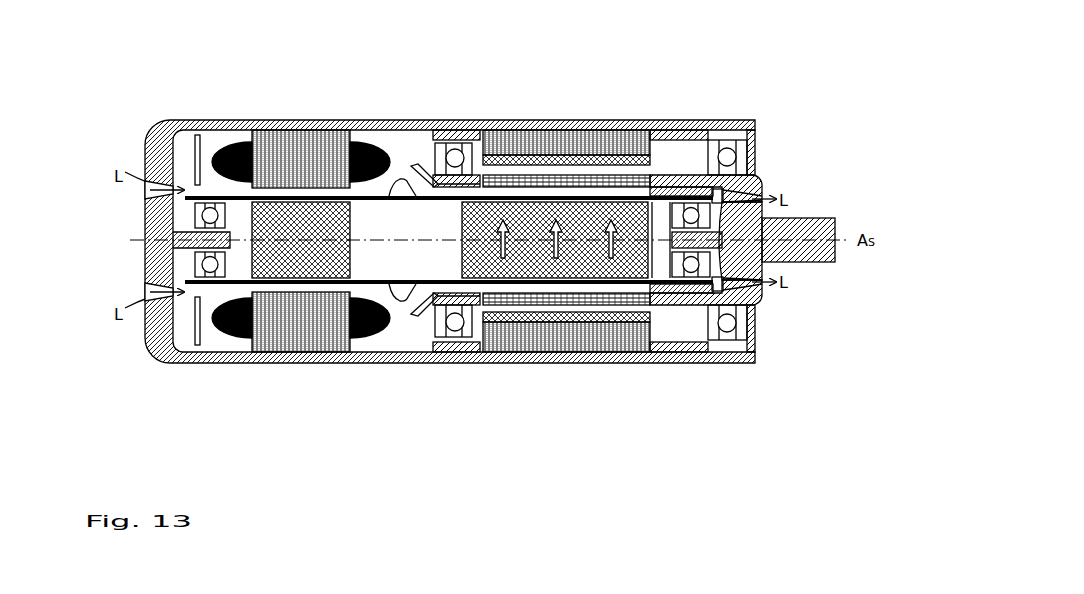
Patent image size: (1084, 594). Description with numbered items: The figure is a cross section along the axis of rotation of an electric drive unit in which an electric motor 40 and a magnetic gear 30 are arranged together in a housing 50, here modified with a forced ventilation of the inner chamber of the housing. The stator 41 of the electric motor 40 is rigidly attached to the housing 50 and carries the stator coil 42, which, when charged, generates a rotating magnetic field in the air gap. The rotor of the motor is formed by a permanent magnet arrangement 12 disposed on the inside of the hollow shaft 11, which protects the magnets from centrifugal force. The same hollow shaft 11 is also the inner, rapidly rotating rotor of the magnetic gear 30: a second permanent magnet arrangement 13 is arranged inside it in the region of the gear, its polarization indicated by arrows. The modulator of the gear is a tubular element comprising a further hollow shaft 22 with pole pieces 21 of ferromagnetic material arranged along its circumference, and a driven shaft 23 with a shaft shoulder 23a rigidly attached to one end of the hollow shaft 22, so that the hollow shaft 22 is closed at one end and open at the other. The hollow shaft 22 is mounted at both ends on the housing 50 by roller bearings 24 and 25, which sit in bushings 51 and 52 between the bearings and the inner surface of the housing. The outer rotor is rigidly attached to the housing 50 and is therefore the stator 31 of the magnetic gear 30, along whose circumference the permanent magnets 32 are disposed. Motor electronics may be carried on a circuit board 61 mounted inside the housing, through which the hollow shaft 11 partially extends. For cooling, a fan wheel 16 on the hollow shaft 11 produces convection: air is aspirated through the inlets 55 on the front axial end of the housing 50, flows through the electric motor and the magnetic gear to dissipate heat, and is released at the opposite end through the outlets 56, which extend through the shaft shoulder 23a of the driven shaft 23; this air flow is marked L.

The hollow shaft 11 is at (230, 196).
The permanent magnet arrangement 12 is at (348, 257).
The second permanent magnet arrangement 13 is at (462, 215).
The fan wheel 16 is at (403, 297).
The pole pieces 21 is at (648, 305).
The hollow shaft 22 is at (684, 297).
The driven shaft 23 is at (836, 218).
The shaft shoulder 23a is at (763, 294).
The roller bearing 24 is at (455, 328).
The roller bearing 25 is at (729, 325).
The magnetic gear 30 is at (614, 232).
The stator 31 is at (604, 130).
The permanent magnets 32 is at (651, 160).
The electric motor 40 is at (277, 218).
The stator 41 is at (322, 130).
The stator coil 42 is at (223, 337).
The housing 50 is at (170, 119).
The bushing 51 is at (441, 130).
The bushing 52 is at (656, 352).
The inlet 55 is at (148, 195).
The outlet 56 is at (769, 194).
The circuit board 61 is at (197, 330).